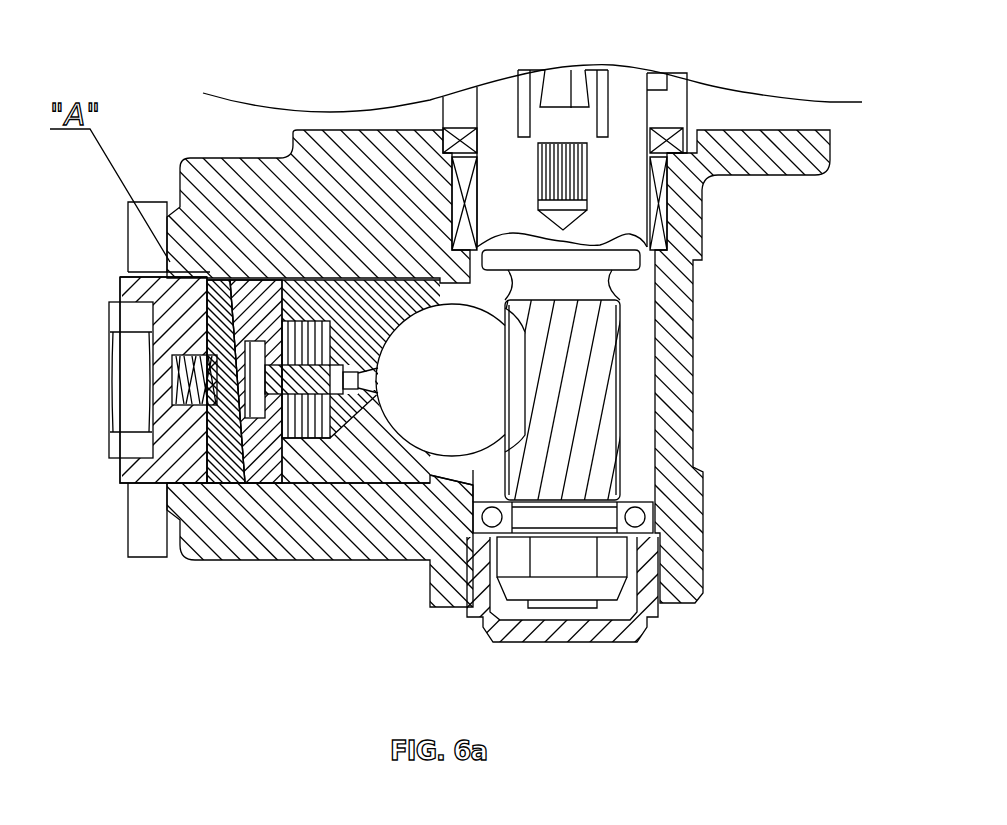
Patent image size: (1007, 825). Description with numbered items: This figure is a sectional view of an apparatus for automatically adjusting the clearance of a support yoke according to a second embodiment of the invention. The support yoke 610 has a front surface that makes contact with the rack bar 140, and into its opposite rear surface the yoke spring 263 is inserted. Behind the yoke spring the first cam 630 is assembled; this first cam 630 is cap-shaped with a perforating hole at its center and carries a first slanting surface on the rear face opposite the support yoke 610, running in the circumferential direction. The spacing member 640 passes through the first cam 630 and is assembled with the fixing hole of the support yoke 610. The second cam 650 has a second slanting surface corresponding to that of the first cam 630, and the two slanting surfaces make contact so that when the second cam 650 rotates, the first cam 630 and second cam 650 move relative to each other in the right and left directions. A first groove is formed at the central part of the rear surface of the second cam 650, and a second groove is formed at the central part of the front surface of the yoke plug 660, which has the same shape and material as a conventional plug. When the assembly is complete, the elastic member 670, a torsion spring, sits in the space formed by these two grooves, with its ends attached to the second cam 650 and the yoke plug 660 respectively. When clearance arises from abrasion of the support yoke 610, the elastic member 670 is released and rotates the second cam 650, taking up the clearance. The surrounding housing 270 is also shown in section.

The housing 270 is at (212, 172).
The yoke plug 660 is at (147, 290).
The elastic member 670 is at (175, 378).
The spacing member 640 is at (155, 415).
The second cam 650 is at (218, 475).
The first cam 630 is at (258, 478).
The yoke spring 263 is at (317, 478).
The support yoke 610 is at (383, 478).
The rack bar 140 is at (478, 390).